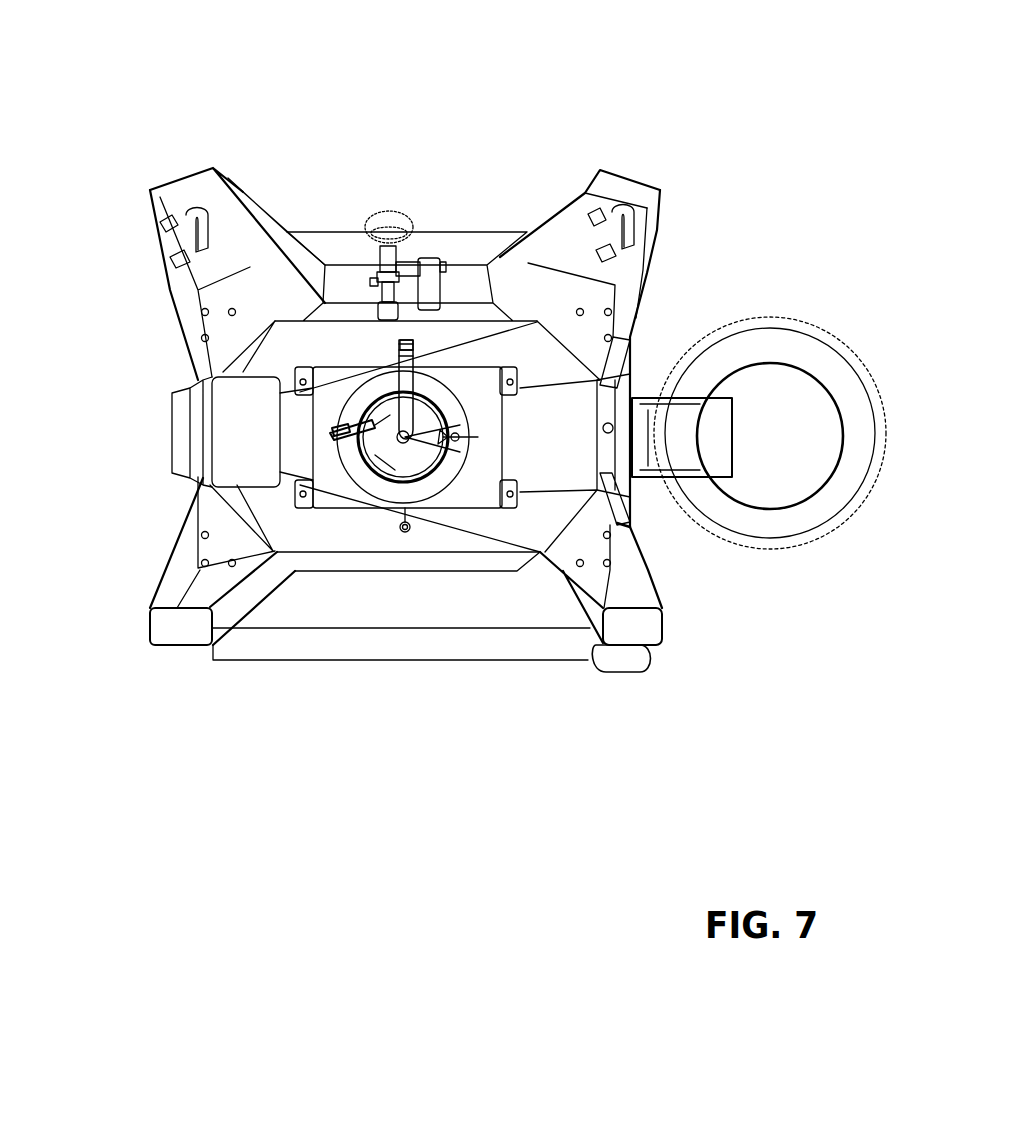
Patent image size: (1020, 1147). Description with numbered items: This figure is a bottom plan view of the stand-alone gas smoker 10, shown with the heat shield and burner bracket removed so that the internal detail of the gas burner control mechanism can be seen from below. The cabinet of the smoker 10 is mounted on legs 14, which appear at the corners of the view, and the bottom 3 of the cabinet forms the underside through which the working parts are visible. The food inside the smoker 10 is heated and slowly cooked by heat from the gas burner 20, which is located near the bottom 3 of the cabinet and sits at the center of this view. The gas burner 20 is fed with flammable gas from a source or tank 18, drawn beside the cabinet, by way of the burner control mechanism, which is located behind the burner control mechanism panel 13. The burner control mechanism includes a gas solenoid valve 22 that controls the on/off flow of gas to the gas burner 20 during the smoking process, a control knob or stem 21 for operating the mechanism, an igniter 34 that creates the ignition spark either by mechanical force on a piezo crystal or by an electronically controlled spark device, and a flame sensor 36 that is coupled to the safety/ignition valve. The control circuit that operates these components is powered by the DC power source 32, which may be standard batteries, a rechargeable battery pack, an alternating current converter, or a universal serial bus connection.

The stand-alone gas smoker 10 is at (764, 120).
The bottom 3 is at (528, 608).
The burner control mechanism panel 13 is at (330, 245).
The legs 14 is at (190, 182).
The source (tank) of flammable gas 18 is at (788, 335).
The gas burner 20 is at (408, 457).
The control knob (stem) 21 is at (382, 210).
The gas solenoid valve 22 is at (410, 262).
The DC power source 32 is at (620, 663).
The igniter 34 is at (456, 442).
The flame sensor 36 is at (350, 443).